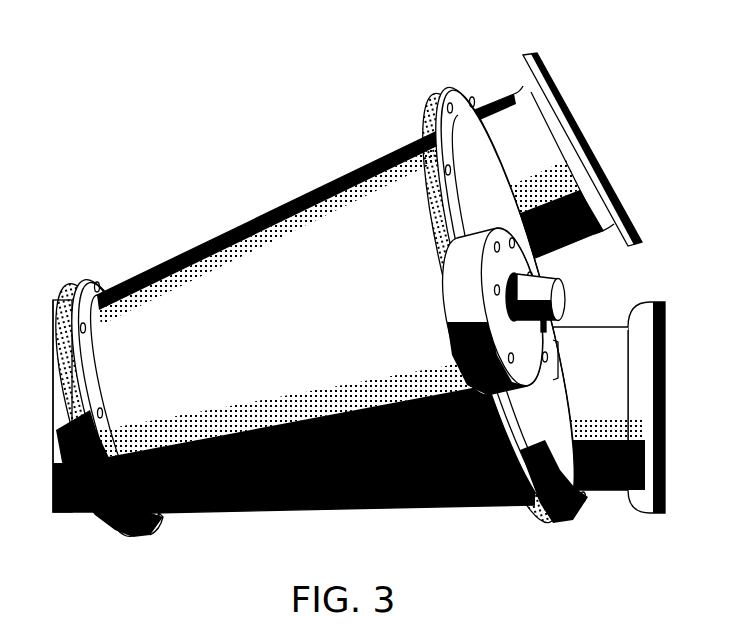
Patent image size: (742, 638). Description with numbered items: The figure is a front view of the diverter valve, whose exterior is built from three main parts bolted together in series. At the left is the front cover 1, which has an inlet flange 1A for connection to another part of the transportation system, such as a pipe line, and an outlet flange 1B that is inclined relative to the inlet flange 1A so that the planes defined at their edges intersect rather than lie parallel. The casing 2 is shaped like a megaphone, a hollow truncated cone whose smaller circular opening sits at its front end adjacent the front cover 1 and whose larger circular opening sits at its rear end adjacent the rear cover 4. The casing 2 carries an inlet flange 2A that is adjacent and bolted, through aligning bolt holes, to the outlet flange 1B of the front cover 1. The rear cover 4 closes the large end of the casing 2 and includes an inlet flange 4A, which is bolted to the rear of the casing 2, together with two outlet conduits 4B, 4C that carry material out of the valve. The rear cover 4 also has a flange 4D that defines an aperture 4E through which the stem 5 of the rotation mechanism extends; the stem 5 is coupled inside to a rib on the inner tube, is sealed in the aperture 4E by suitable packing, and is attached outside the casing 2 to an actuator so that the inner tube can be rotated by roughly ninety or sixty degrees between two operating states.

The front cover 1 is at (62, 288).
The inlet flange 1A is at (55, 513).
The outlet flange 1B is at (115, 528).
The casing 2 is at (293, 197).
The inlet flange 2A is at (166, 519).
The rear cover 4 is at (460, 93).
The inlet flange 4A is at (588, 497).
The outlet conduit 4B is at (550, 81).
The outlet conduit 4C is at (666, 464).
The flange 4D is at (468, 330).
The aperture 4E is at (548, 327).
The stem 5 is at (567, 290).